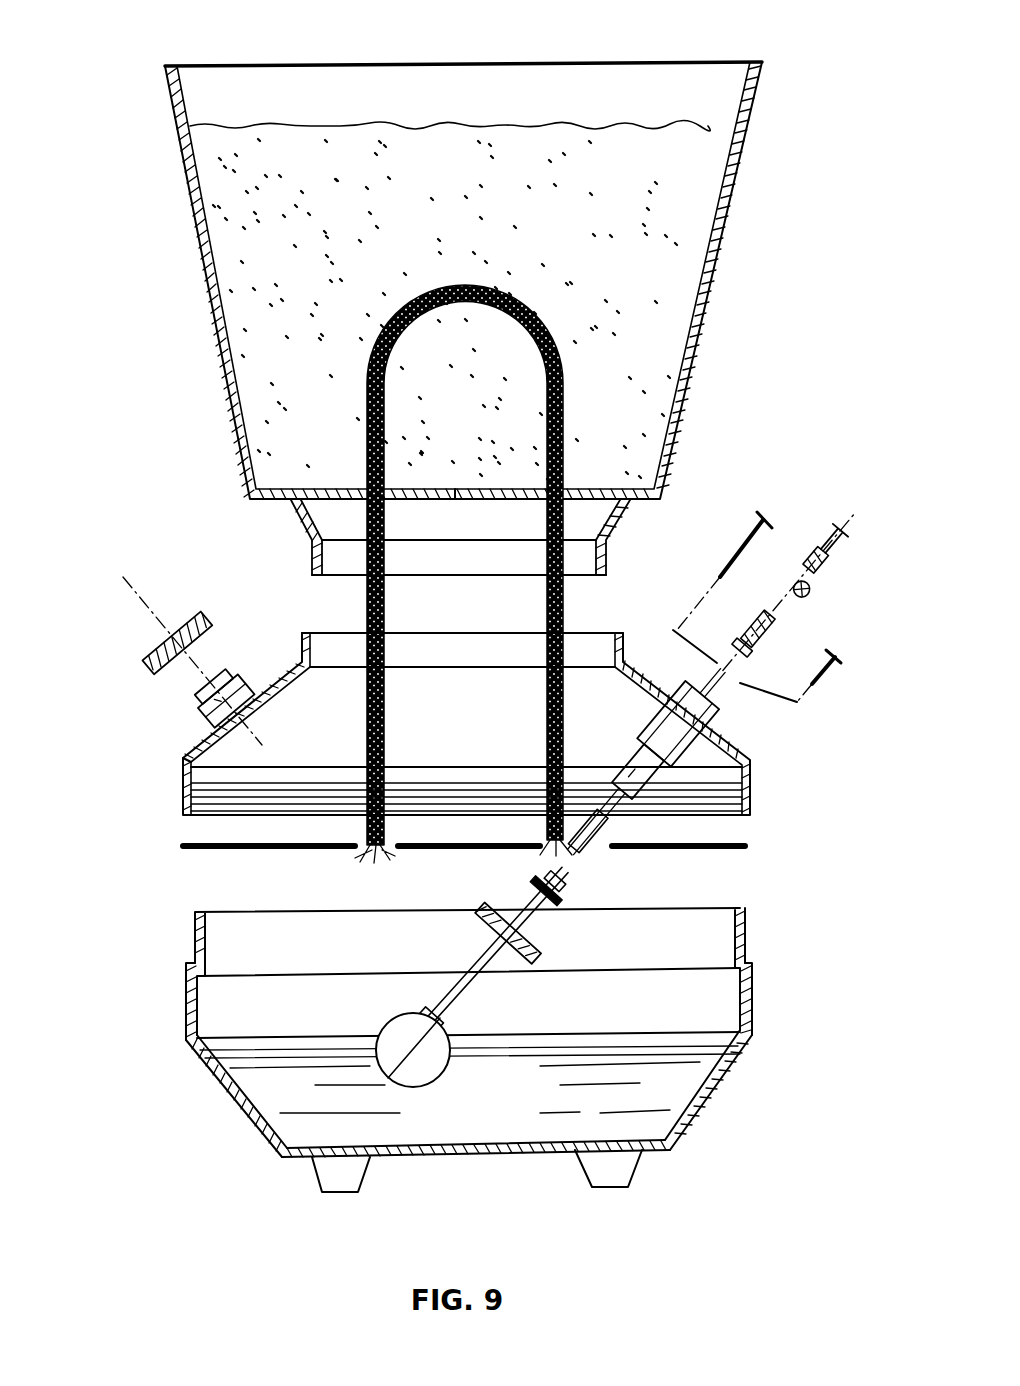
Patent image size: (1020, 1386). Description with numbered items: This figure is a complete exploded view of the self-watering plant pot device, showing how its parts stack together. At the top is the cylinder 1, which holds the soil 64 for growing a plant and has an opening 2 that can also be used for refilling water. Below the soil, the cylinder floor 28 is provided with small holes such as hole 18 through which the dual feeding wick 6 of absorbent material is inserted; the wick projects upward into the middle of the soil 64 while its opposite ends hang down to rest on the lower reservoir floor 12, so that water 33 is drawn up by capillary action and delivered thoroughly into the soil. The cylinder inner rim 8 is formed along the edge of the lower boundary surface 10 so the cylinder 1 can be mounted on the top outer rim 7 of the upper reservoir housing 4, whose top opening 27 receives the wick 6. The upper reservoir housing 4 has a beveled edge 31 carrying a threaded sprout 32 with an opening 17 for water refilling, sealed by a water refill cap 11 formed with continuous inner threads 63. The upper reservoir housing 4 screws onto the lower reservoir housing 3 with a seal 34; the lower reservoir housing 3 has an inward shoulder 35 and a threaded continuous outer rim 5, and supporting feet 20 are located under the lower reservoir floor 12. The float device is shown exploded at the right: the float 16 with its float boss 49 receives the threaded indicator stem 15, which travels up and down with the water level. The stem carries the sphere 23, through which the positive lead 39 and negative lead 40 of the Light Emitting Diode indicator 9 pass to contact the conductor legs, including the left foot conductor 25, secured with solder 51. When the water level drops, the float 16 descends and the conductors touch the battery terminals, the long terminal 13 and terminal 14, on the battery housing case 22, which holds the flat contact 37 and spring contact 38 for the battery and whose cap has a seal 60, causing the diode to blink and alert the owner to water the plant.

The cylinder 1 is at (215, 348).
The opening 2 is at (440, 85).
The lower reservoir housing 3 is at (245, 1100).
The upper reservoir housing 4 is at (748, 780).
The threaded continuous outer rim 5 is at (195, 914).
The dual feeding wick 6 is at (565, 357).
The top outer rim 7 is at (622, 640).
The cylinder inner rim 8 is at (318, 556).
The Light Emitting Diode indicator 9 is at (828, 525).
The lower boundary surface 10 is at (298, 518).
The water refill cap 11 is at (480, 900).
The lower reservoir floor 12 is at (485, 1150).
The long terminal 13 is at (740, 550).
The battery terminal 14 is at (838, 700).
The indicator stem 15 is at (475, 975).
The float 16 is at (380, 1028).
The opening 17 is at (215, 705).
The small hole 18 is at (460, 492).
The supporting feet 20 is at (638, 1177).
The battery housing case 22 is at (672, 688).
The sphere 23 is at (812, 585).
The left foot conductor 25 is at (752, 655).
The top opening 27 is at (450, 632).
The cylinder floor 28 is at (400, 490).
The beveled edge 31 is at (185, 760).
The threaded sprout 32 is at (252, 680).
The water 33 is at (715, 1080).
The seal 34 is at (735, 830).
The inward shoulder 35 is at (187, 978).
The flat contact 37 is at (535, 868).
The spring contact 38 is at (578, 905).
The positive lead 39 is at (810, 565).
The negative lead 40 is at (818, 570).
The float boss 49 is at (428, 1010).
The solder 51 is at (760, 625).
The seal 60 is at (590, 888).
The continuous inner threads 63 is at (210, 645).
The soil 64 is at (662, 235).